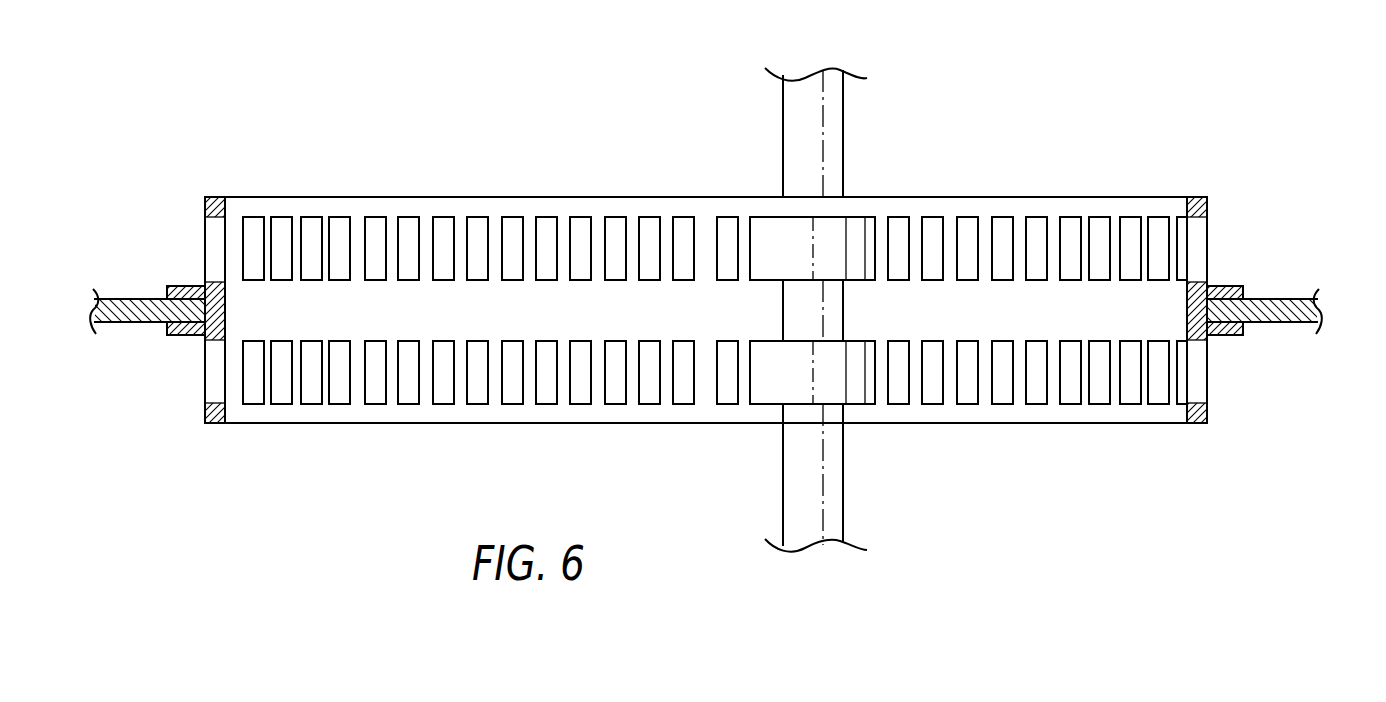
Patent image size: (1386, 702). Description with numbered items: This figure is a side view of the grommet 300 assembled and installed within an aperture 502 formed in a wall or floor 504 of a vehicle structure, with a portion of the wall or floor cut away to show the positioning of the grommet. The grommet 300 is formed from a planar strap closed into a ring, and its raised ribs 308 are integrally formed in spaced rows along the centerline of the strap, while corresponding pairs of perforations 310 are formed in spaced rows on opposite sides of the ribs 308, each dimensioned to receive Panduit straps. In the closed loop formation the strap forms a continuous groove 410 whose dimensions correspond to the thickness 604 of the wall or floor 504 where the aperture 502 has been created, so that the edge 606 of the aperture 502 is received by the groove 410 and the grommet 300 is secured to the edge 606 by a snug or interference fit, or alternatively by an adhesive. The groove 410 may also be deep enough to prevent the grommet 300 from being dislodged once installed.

The grommet 300 is at (1045, 150).
The perforations 310 is at (1002, 404).
The edge of the aperture 606 is at (205, 305).
The thickness of the wall or floor 604 is at (124, 310).
The aperture 502 is at (180, 298).
The groove 410 is at (180, 325).
The wall or floor 504 is at (1285, 298).
The ribs 308 is at (1238, 335).